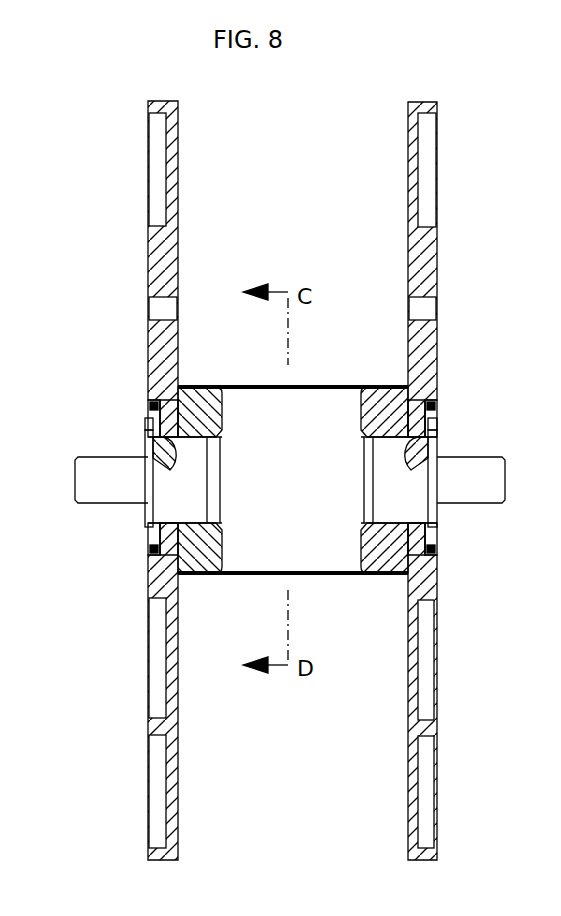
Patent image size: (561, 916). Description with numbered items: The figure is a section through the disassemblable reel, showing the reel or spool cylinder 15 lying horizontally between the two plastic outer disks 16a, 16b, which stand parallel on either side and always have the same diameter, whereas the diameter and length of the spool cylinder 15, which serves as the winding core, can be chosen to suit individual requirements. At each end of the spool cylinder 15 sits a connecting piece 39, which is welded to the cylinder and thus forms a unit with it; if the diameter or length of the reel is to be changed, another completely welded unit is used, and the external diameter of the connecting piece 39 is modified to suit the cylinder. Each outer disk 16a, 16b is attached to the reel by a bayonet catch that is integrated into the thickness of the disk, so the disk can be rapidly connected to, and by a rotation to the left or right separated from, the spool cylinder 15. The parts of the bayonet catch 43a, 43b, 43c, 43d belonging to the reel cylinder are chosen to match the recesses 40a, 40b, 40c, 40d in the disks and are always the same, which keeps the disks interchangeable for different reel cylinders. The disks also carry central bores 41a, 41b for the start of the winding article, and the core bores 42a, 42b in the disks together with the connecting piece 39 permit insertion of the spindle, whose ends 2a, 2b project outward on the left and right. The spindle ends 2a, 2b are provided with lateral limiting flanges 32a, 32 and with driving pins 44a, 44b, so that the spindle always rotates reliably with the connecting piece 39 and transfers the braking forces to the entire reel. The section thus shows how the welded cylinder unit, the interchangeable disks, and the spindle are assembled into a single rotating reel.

The spindle end 2a is at (87, 474).
The spindle end 2b is at (478, 470).
The reel or spool cylinder 15 is at (292, 454).
The outer disk 16a is at (156, 192).
The outer disk 16b is at (432, 202).
The lateral limiting flange 32 is at (435, 452).
The lateral limiting flange 32a is at (147, 518).
The connecting piece 39 is at (200, 392).
The recess 40a is at (143, 412).
The recess 40b is at (148, 546).
The recess 40c is at (440, 408).
The recess 40d is at (438, 552).
The central bore 41a is at (147, 430).
The central bore 41b is at (438, 432).
The core bore 42a is at (168, 304).
The core bore 42b is at (432, 310).
The bayonet catch part 43a is at (150, 396).
The bayonet catch part 43b is at (155, 568).
The bayonet catch part 43c is at (437, 388).
The bayonet catch part 43d is at (433, 568).
The driving pin 44a is at (158, 447).
The driving pin 44b is at (423, 446).